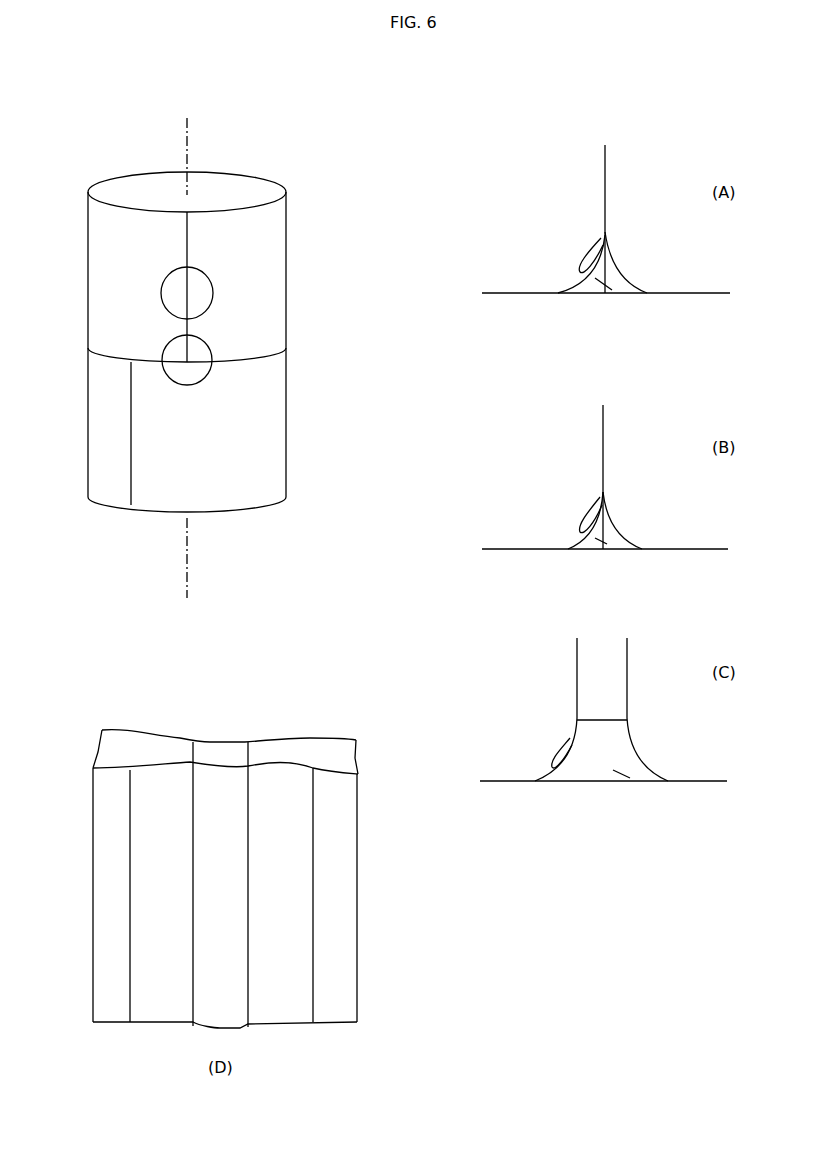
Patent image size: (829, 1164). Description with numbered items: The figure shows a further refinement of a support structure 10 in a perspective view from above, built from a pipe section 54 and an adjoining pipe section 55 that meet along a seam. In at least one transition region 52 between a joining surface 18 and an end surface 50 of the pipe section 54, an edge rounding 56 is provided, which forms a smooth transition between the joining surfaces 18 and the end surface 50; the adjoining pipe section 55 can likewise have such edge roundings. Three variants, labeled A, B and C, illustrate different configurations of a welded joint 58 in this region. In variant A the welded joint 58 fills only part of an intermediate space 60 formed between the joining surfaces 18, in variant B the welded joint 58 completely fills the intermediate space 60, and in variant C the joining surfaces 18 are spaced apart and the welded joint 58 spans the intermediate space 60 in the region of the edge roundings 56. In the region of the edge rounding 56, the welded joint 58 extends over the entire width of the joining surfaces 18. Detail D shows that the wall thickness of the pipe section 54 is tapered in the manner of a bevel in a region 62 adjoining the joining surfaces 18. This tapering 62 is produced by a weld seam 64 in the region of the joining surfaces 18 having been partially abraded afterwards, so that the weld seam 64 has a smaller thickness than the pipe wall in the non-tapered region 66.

The support structure 10 is at (218, 152).
The joining surface 18 is at (605, 165).
The end surface 50 is at (555, 292).
The transition region 52 is at (552, 242).
The pipe section 54 is at (270, 205).
The adjoining pipe section 55 is at (240, 420).
The edge rounding 56 is at (603, 238).
The welded joint 58 is at (607, 292).
The intermediate space 60 is at (620, 287).
The tapered region 62 is at (170, 748).
The weld seam 64 is at (220, 746).
The non-tapered region 66 is at (103, 745).